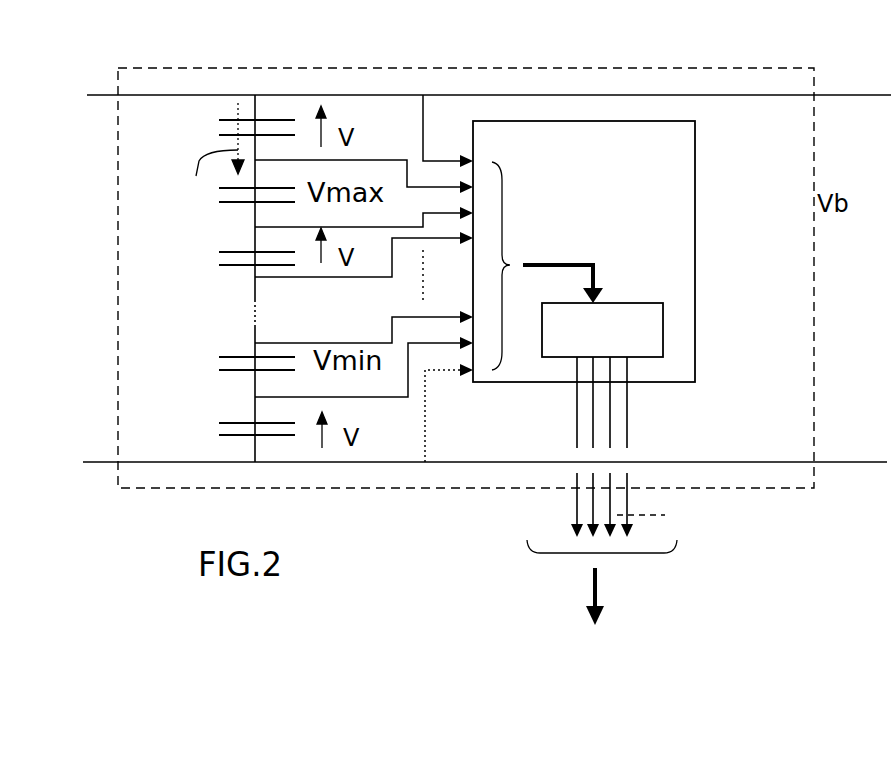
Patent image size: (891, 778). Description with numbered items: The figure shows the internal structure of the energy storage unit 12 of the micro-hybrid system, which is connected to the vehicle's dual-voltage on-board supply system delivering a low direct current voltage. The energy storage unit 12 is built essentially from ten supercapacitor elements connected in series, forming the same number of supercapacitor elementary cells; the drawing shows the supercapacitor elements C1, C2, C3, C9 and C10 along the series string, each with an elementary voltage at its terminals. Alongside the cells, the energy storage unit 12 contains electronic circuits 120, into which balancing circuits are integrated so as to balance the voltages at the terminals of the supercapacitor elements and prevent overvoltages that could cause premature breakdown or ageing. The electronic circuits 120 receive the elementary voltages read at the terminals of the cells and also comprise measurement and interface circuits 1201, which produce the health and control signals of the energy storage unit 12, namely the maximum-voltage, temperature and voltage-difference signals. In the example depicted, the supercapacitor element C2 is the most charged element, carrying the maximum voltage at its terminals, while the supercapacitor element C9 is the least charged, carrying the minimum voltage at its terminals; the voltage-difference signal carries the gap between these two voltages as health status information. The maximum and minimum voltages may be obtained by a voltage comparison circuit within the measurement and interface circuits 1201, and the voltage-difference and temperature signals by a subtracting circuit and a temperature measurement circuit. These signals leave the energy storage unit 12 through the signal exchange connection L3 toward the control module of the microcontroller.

The energy storage unit 12 is at (612, 73).
The electronic circuits 120 is at (635, 251).
The measurement and interface circuits 1201 is at (643, 343).
The signal exchange connection L3 is at (630, 600).
The supercapacitor element C1 is at (226, 116).
The supercapacitor element C2 is at (226, 203).
The supercapacitor element C3 is at (226, 257).
The supercapacitor element C9 is at (226, 368).
The supercapacitor element C10 is at (216, 433).